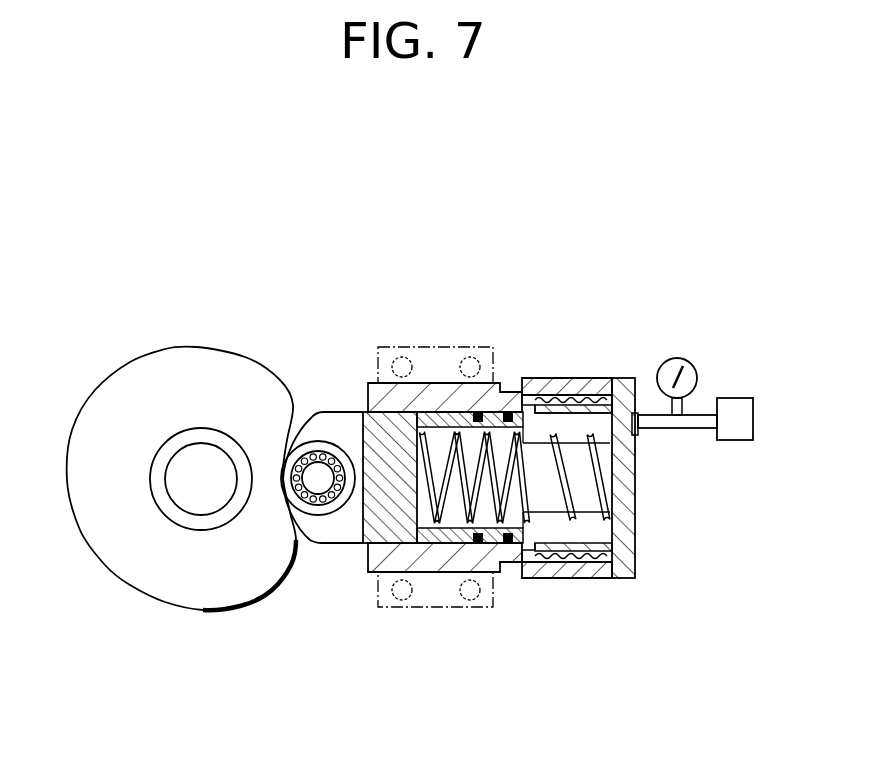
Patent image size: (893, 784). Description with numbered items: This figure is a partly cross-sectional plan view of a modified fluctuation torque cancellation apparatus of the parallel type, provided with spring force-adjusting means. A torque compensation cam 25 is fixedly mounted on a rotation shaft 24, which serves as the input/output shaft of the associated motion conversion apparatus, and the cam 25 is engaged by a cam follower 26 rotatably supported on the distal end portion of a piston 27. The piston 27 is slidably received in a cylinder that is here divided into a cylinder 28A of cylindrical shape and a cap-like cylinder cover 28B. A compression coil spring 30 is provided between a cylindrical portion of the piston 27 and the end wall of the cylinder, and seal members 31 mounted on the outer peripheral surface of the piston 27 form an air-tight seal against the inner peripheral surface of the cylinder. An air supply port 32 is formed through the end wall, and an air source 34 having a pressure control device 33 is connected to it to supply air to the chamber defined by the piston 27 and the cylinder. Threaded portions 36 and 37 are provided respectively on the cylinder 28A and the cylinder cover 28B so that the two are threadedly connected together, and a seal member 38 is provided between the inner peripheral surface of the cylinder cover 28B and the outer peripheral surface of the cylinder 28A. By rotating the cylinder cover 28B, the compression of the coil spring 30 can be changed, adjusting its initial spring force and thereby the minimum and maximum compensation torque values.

The rotation shaft 24 is at (180, 462).
The torque compensation cam 25 is at (147, 580).
The cam follower 26 is at (317, 508).
The piston 27 is at (392, 428).
The cylinder 28A is at (552, 395).
The cylinder cover 28B is at (625, 518).
The compression coil spring 30 is at (575, 440).
The seal members 31 is at (508, 413).
The air supply port 32 is at (634, 415).
The pressure control device 33 is at (697, 372).
The air source 34 is at (743, 440).
The threaded portion 36 is at (590, 578).
The threaded portion 37 is at (610, 578).
The seal member 38 is at (535, 578).